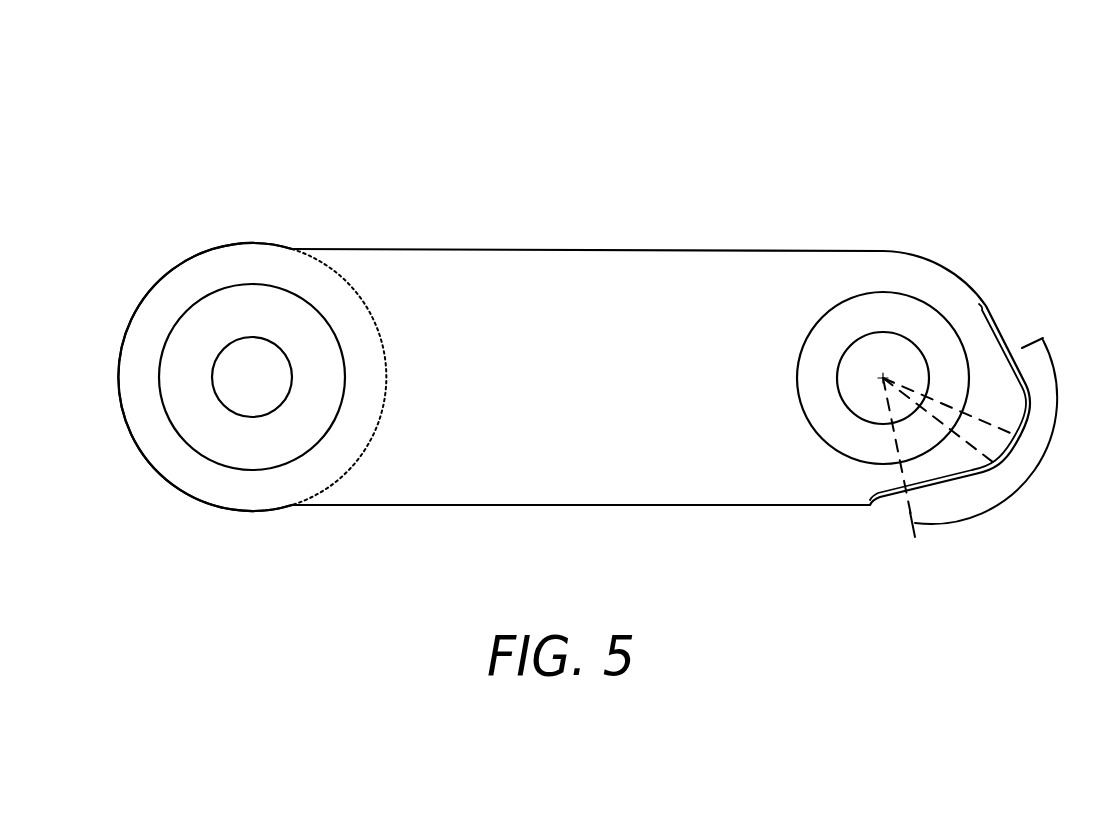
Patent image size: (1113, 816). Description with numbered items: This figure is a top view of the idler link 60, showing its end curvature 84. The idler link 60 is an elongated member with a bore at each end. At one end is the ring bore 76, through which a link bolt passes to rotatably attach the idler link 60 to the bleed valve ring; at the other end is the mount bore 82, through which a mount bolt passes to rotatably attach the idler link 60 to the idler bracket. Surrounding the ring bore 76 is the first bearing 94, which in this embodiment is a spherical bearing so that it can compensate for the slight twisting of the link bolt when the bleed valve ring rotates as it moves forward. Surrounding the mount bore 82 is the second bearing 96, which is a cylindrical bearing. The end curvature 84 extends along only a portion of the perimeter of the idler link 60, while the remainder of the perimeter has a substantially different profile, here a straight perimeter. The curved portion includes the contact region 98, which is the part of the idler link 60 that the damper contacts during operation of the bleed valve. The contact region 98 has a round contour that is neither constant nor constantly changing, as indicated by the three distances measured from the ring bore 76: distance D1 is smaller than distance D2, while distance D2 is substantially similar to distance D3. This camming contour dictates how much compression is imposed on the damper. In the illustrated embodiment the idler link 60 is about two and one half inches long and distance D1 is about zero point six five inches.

The idler link 60 is at (650, 152).
The ring bore 76 is at (845, 350).
The mount bore 82 is at (250, 338).
The end curvature 84 is at (1003, 328).
The first bearing 94 is at (865, 313).
The second bearing 96 is at (187, 332).
The contact region 98 is at (1038, 468).
The distance D1 is at (890, 449).
The distance D2 is at (940, 422).
The distance D3 is at (949, 404).